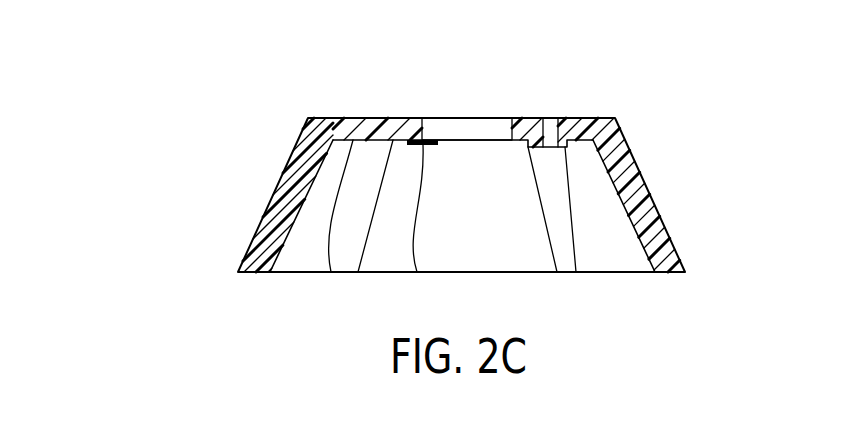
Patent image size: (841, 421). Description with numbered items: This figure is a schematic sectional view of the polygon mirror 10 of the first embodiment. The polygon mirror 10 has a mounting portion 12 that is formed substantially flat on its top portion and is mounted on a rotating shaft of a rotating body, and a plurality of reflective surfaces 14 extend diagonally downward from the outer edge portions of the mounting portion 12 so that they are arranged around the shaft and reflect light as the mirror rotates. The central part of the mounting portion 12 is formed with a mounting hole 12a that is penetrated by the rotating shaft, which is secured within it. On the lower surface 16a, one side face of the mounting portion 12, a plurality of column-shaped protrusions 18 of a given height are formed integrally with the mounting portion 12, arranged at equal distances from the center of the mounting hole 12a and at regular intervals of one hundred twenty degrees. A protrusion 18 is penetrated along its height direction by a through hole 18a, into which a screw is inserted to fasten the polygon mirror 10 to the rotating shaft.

The polygon mirror 10 is at (647, 143).
The mounting portion 12 is at (372, 128).
The mounting hole 12a is at (468, 128).
The reflective surfaces 14 is at (283, 182).
The lower surface 16a is at (331, 272).
The protrusions 18 is at (417, 272).
The through hole 18a is at (552, 128).